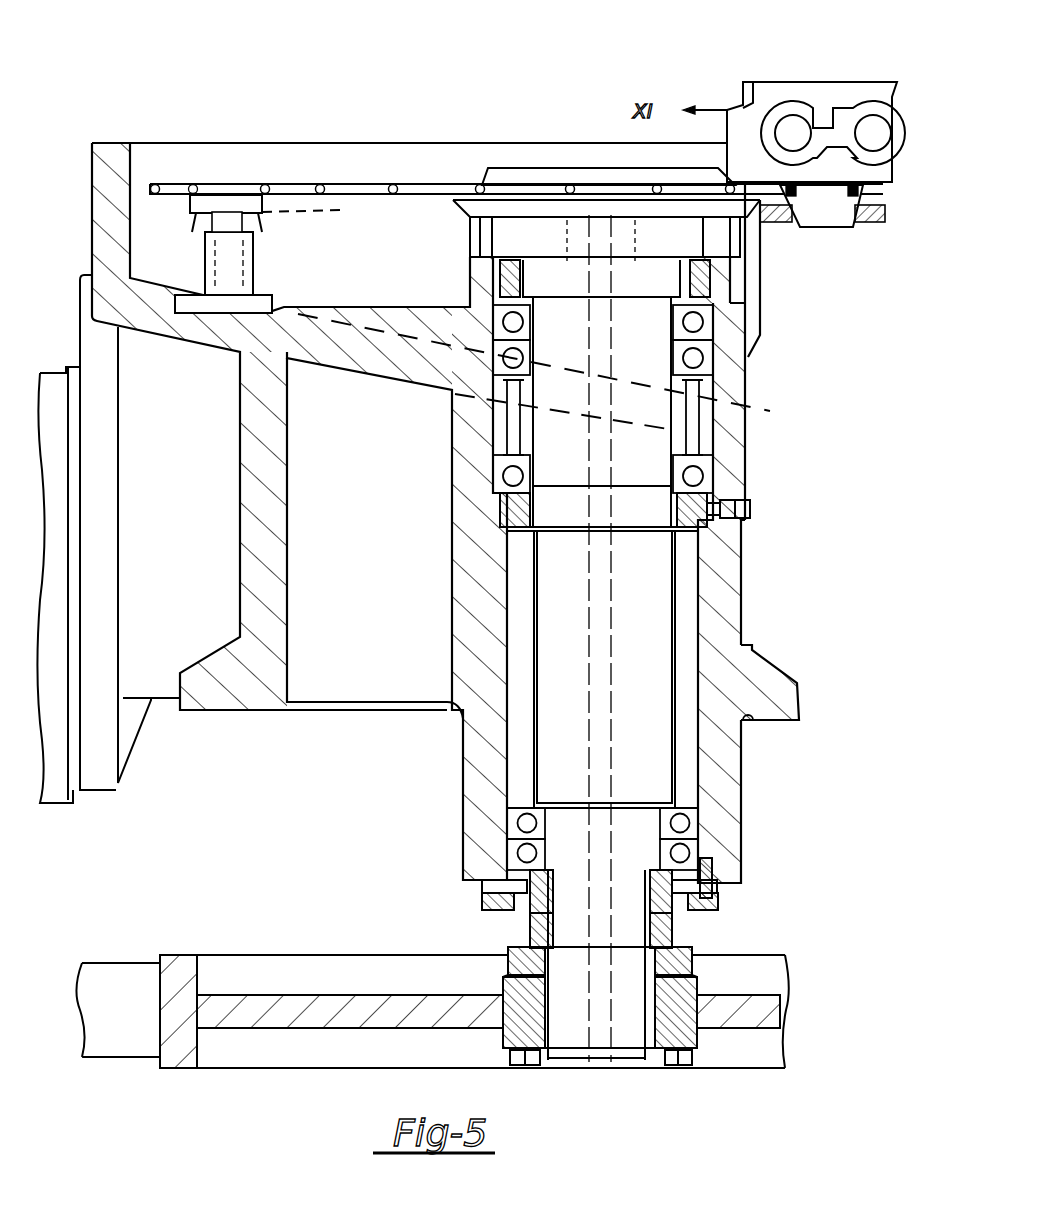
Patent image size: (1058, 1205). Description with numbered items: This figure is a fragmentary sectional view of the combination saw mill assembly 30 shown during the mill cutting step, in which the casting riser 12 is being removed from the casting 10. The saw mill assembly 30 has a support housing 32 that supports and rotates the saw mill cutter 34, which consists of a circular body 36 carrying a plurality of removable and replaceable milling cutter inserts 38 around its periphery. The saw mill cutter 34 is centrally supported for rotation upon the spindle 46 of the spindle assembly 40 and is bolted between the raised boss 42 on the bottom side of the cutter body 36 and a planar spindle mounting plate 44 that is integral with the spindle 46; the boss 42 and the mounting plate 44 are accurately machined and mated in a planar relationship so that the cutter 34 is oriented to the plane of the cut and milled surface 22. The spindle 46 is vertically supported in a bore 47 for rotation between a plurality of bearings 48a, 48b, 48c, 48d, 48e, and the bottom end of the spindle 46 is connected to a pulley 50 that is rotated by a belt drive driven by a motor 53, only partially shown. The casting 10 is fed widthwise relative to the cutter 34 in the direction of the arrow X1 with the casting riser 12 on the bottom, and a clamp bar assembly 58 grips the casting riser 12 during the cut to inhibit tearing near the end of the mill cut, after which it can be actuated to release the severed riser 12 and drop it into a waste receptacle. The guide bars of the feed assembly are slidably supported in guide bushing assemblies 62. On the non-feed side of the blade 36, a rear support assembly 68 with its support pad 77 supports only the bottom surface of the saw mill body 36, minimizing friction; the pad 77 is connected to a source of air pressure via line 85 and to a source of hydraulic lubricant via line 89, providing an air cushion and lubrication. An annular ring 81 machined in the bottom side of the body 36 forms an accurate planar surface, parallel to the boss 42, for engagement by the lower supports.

The casting 10 is at (780, 78).
The casting riser 12 is at (833, 227).
The cut and milled surface 22 is at (776, 214).
The saw mill assembly 30 is at (340, 826).
The support housing 32 is at (268, 716).
The saw mill cutter 34 is at (368, 178).
The circular body 36 is at (432, 184).
The milling cutter inserts 38 is at (325, 184).
The spindle assembly 40 is at (655, 452).
The raised boss 42 is at (525, 172).
The spindle mounting plate 44 is at (465, 205).
The spindle 46 is at (655, 578).
The bore 47 is at (700, 648).
The bearing 48a is at (493, 312).
The bearing 48b is at (493, 362).
The bearing 48c is at (497, 480).
The bearing 48d is at (515, 830).
The bearing 48e is at (515, 862).
The pulley 50 is at (735, 1002).
The motor 53 is at (63, 800).
The clamp bar assembly 58 is at (790, 224).
The guide bushing assemblies 62 is at (125, 975).
The rear support assembly 68 is at (238, 260).
The support pad 77 is at (186, 197).
The annular ring 81 is at (317, 221).
The line 85 is at (192, 218).
The line 89 is at (257, 222).